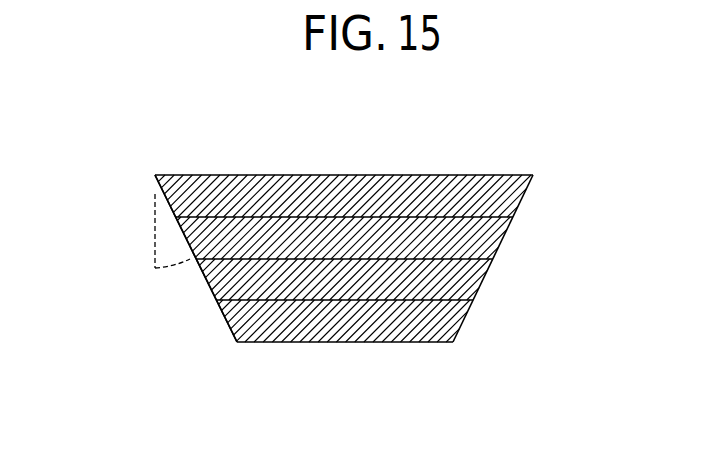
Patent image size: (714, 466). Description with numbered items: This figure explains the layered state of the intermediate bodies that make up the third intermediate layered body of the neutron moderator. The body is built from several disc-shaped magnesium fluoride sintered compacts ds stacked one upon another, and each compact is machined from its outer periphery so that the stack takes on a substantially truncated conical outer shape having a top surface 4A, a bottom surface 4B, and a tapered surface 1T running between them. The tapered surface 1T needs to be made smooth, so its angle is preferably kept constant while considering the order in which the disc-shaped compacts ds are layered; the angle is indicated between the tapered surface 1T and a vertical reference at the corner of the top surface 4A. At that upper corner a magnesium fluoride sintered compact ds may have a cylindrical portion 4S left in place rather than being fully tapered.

The top surface 4A is at (274, 175).
The bottom surface 4B is at (280, 342).
The cylindrical portion 4S is at (154, 188).
The tapered surface 1T is at (184, 240).
The disc-shaped magnesium fluoride sintered compact ds is at (512, 202).